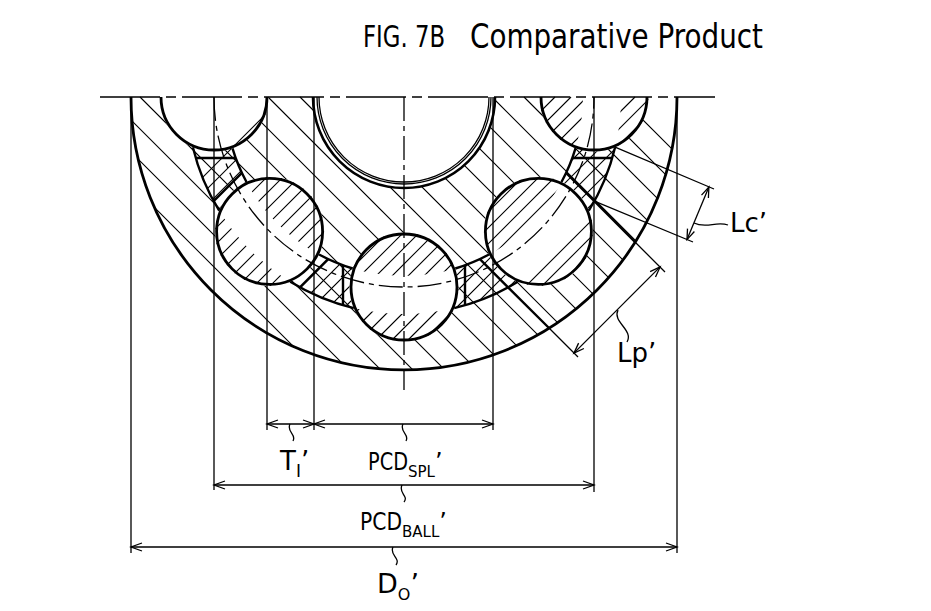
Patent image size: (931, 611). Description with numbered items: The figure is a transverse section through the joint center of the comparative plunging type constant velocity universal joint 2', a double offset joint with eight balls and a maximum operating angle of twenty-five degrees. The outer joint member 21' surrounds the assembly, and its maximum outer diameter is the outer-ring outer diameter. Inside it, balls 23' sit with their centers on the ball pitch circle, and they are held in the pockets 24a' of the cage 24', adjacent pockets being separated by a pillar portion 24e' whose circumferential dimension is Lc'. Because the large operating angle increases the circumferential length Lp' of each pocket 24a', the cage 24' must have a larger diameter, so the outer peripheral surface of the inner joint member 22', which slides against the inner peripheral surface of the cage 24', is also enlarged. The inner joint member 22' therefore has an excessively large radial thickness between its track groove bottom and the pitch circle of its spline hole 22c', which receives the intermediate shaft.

The plunging type constant velocity universal joint 2' is at (451, 243).
The outer joint member 21' is at (404, 257).
The inner joint member 22' is at (451, 238).
The spline hole 22c' is at (404, 140).
The ball 23' is at (404, 256).
The cage 24' is at (345, 227).
The pocket 24a' is at (441, 238).
The pillar portion 24e' is at (613, 230).